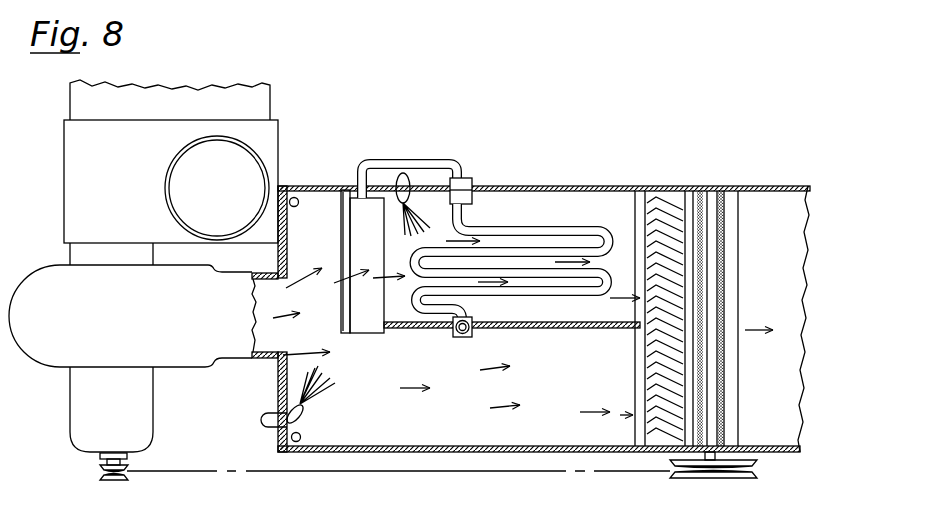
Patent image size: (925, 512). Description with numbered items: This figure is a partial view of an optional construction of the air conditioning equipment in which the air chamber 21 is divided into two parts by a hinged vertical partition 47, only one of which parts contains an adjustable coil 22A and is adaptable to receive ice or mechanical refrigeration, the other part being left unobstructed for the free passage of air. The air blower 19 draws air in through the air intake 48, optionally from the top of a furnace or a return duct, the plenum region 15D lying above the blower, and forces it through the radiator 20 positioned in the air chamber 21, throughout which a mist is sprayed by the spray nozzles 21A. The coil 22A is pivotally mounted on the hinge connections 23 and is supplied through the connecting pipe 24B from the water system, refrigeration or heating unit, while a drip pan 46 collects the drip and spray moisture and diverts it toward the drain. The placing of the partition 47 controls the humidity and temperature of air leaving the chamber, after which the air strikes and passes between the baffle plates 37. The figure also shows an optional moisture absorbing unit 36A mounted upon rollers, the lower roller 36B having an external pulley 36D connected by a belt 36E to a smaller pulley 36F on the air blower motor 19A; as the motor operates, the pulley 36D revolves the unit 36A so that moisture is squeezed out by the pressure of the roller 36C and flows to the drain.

The housing upper portion 15D is at (170, 100).
The air intake 48 is at (217, 188).
The air blower 19 is at (132, 305).
The air blower motor 19A is at (111, 409).
The smaller pulley 36F is at (108, 481).
The belt 36E is at (367, 471).
The external pulley 36D is at (712, 478).
The radiator 20 is at (367, 265).
The drip pan 46 is at (346, 333).
The air chamber 21 is at (321, 395).
The spray nozzles 21A is at (406, 196).
The hinge connections 23 is at (472, 198).
The adjustable coil 22A is at (523, 227).
The connecting pipe 24B is at (473, 332).
The vertical partition 47 is at (578, 330).
The baffle plates 37 is at (645, 365).
The moisture absorbing unit 36A is at (722, 322).
The lower roller 36B is at (710, 418).
The roller 36C is at (735, 437).